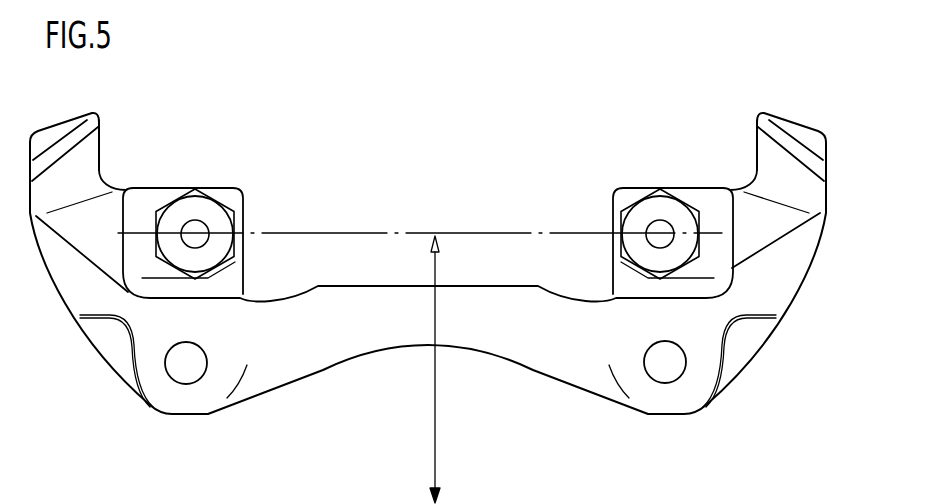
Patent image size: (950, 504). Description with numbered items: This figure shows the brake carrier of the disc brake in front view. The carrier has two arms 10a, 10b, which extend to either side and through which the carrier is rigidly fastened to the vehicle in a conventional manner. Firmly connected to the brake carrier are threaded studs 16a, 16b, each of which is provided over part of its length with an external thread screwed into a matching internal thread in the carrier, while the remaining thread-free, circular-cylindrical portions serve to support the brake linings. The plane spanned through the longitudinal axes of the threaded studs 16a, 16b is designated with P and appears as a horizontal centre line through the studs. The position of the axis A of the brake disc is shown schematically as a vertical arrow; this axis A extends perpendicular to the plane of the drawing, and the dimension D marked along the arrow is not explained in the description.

The arm 10a is at (88, 278).
The arm 10b is at (773, 268).
The threaded stud 16a is at (207, 217).
The threaded stud 16b is at (648, 215).
The plane P is at (313, 233).
The distance D is at (437, 384).
The axis A is at (440, 503).